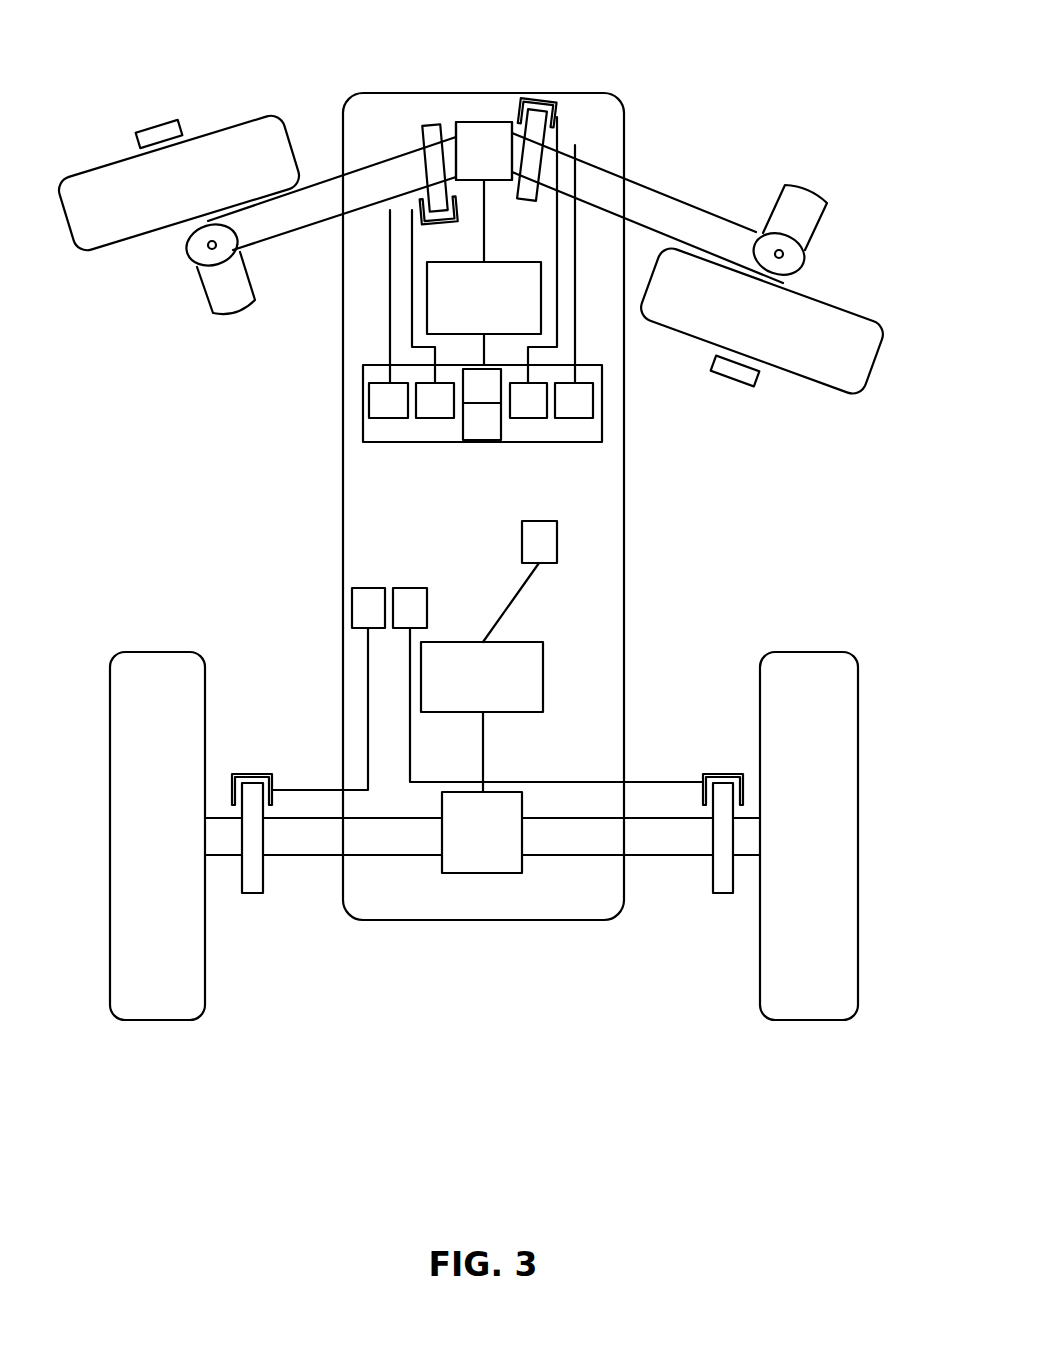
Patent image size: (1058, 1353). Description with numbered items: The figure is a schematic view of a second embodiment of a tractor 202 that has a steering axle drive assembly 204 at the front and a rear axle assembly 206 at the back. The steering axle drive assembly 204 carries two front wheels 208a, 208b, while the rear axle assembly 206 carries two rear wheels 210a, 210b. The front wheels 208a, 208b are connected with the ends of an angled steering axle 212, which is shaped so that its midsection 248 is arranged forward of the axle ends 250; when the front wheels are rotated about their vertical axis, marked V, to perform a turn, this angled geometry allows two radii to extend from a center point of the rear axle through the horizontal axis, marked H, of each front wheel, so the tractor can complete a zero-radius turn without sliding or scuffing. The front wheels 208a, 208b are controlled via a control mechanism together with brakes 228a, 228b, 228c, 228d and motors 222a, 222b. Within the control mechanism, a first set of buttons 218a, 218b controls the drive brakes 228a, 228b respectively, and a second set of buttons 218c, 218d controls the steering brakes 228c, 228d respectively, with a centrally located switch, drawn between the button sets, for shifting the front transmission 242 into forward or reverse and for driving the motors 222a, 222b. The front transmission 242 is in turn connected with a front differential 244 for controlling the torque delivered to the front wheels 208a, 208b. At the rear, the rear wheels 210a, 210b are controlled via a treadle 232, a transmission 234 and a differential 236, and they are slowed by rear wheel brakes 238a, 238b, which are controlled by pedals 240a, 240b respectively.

The tractor 202 is at (170, 448).
The steering axle drive assembly 204 is at (702, 70).
The rear axle assembly 206 is at (356, 1012).
The front wheel 208a is at (125, 204).
The front wheel 208b is at (729, 346).
The rear wheel 210a is at (115, 859).
The rear wheel 210b is at (766, 859).
The angled steering axle 212 is at (367, 177).
The button 218a is at (432, 410).
The button 218b is at (535, 410).
The button 218c is at (387, 400).
The button 218d is at (580, 402).
The motor 222a is at (190, 128).
The motor 222b is at (747, 380).
The drive brake 228a is at (437, 133).
The drive brake 228b is at (532, 123).
The steering brake 228c is at (230, 290).
The steering brake 228d is at (803, 211).
The treadle 232 is at (543, 548).
The transmission 234 is at (451, 696).
The differential 236 is at (451, 849).
The rear wheel brake 238a is at (253, 882).
The rear wheel brake 238b is at (725, 880).
The pedal 240a is at (368, 606).
The pedal 240b is at (410, 618).
The front transmission 242 is at (452, 316).
The front differential 244 is at (490, 137).
The midsection 248 is at (517, 100).
The axle end 250 is at (235, 226).
The horizontal axis H is at (150, 125).
The vertical axis V is at (210, 246).